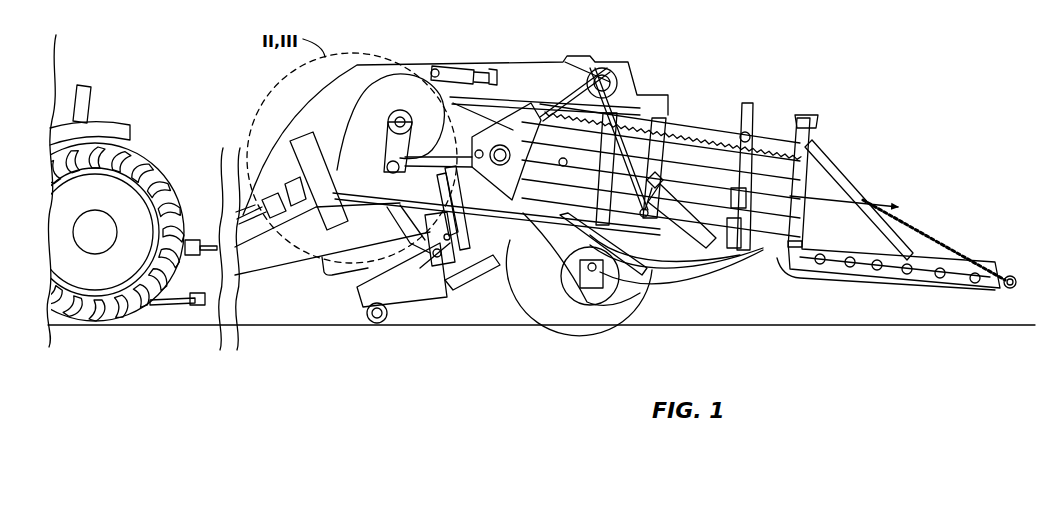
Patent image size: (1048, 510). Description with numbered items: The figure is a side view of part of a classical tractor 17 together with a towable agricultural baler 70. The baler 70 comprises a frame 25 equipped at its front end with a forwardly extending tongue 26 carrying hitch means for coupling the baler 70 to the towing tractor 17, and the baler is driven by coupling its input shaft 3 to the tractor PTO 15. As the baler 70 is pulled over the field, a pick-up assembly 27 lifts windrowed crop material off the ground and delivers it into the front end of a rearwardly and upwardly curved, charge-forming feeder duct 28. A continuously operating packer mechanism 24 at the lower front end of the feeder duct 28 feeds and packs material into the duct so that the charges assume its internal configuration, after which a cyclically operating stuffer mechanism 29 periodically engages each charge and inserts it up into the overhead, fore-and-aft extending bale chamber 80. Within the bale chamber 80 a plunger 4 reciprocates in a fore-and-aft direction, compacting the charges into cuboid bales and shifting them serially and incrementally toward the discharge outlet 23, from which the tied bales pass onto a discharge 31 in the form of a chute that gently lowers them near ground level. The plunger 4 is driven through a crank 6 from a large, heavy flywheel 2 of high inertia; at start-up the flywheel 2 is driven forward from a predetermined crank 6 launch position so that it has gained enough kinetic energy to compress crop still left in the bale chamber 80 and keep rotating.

The flywheel 2 is at (302, 140).
The baler input shaft 3 is at (240, 214).
The plunger 4 is at (513, 132).
The crank 6 is at (390, 140).
The tractor PTO 15 is at (189, 240).
The tractor 17 is at (152, 128).
The discharge outlet 23 is at (826, 187).
The packer mechanism 24 is at (450, 270).
The frame 25 is at (512, 213).
The tongue 26 is at (273, 253).
The pick-up assembly 27 is at (408, 320).
The feeder duct 28 is at (480, 282).
The stuffer mechanism 29 is at (500, 232).
The discharge 31 is at (947, 238).
The agricultural baler 70 is at (783, 62).
The bale chamber 80 is at (700, 130).